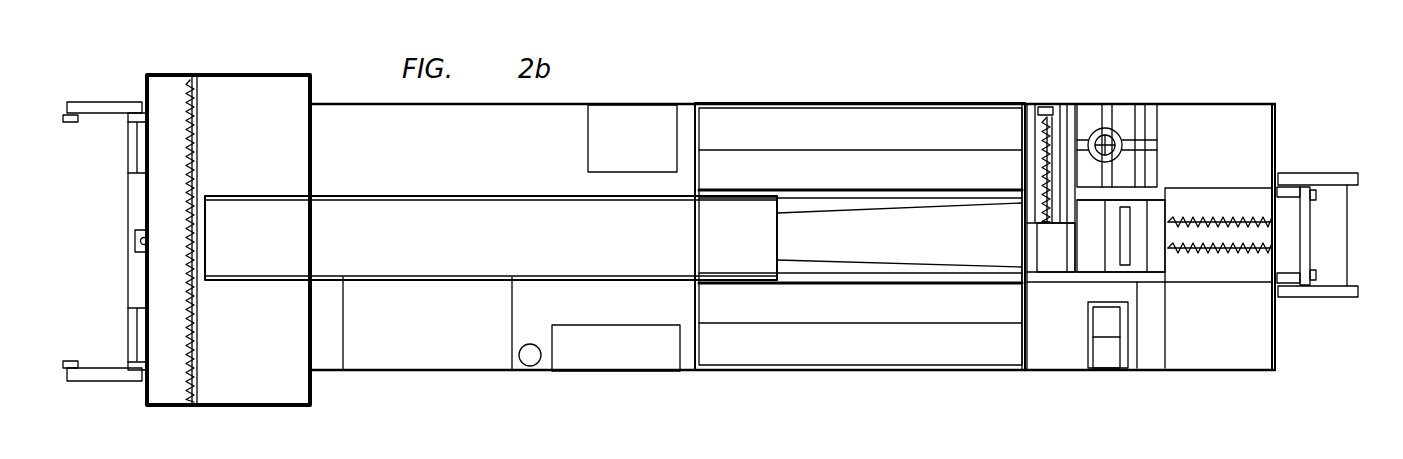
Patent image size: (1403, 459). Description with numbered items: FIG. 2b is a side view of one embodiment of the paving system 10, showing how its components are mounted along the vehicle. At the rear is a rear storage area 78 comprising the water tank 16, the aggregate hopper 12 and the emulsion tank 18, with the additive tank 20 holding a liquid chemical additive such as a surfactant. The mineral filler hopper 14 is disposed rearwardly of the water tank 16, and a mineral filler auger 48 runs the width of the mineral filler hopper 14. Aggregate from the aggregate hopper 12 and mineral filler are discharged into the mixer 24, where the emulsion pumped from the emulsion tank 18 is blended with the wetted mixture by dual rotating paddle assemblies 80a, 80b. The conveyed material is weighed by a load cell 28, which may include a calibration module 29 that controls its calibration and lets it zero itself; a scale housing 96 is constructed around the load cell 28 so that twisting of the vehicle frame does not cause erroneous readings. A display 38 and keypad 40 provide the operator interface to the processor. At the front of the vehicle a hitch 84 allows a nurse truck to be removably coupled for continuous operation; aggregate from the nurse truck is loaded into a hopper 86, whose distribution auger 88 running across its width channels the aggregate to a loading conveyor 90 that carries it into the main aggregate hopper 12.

The paving system 10 is at (1330, 52).
The aggregate hopper 12 is at (883, 247).
The mineral filler hopper 14 is at (1033, 140).
The water tank 16 is at (844, 141).
The emulsion tank 18 is at (843, 356).
The additive tank 20 is at (1120, 112).
The mixer 24 is at (1178, 190).
The load cell 28 is at (1122, 253).
The calibration module 29 is at (1113, 360).
The display 38 is at (1059, 355).
The keypad 40 is at (1100, 318).
The mineral filler auger 48 is at (1038, 208).
The rear storage area 78 is at (918, 372).
The rotating paddle assembly 80a is at (1230, 253).
The rotating paddle assembly 80b is at (1217, 218).
The hitch 84 is at (72, 122).
The hopper 86 is at (224, 159).
The distribution auger 88 is at (198, 333).
The loading conveyor 90 is at (419, 247).
The scale housing 96 is at (1158, 265).